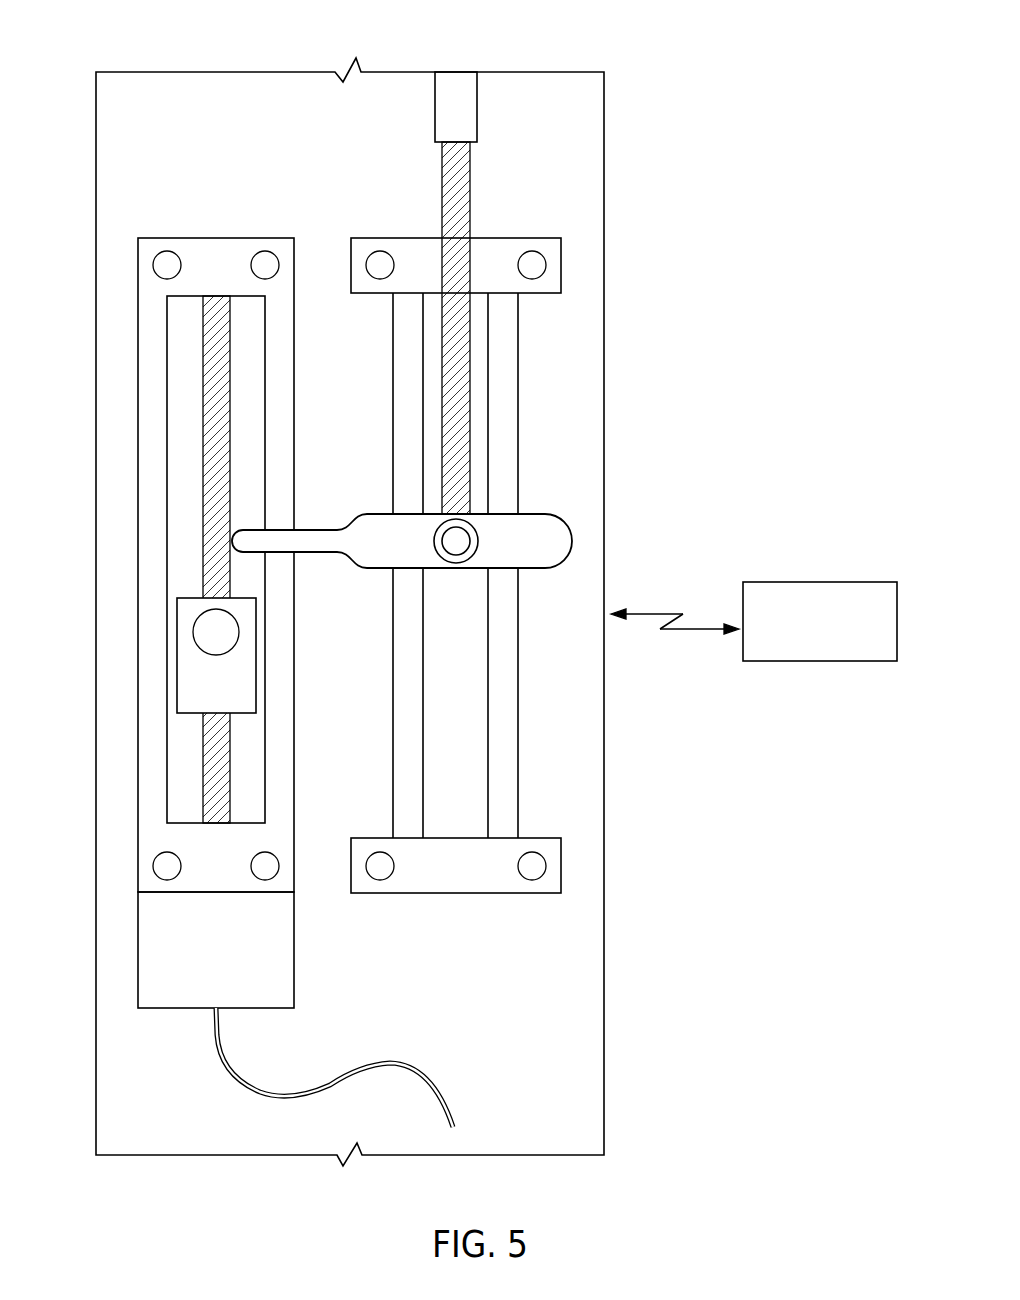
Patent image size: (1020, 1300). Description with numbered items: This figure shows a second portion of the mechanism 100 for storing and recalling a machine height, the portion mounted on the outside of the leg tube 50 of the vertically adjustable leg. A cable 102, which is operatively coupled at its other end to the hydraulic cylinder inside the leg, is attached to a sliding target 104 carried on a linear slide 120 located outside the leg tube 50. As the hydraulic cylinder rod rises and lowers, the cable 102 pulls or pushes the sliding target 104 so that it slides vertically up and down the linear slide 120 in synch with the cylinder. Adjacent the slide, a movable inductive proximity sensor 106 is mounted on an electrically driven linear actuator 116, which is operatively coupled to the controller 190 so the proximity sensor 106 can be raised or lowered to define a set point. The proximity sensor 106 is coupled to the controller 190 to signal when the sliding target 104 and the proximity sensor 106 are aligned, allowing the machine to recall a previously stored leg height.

The mechanism 100 is at (471, 584).
The leg tube 50 is at (118, 167).
The cable 102 is at (455, 193).
The sliding target 104 is at (520, 528).
The proximity sensor 106 is at (243, 678).
The linear actuator 116 is at (267, 760).
The linear slide 120 is at (503, 738).
The controller 190 is at (820, 582).